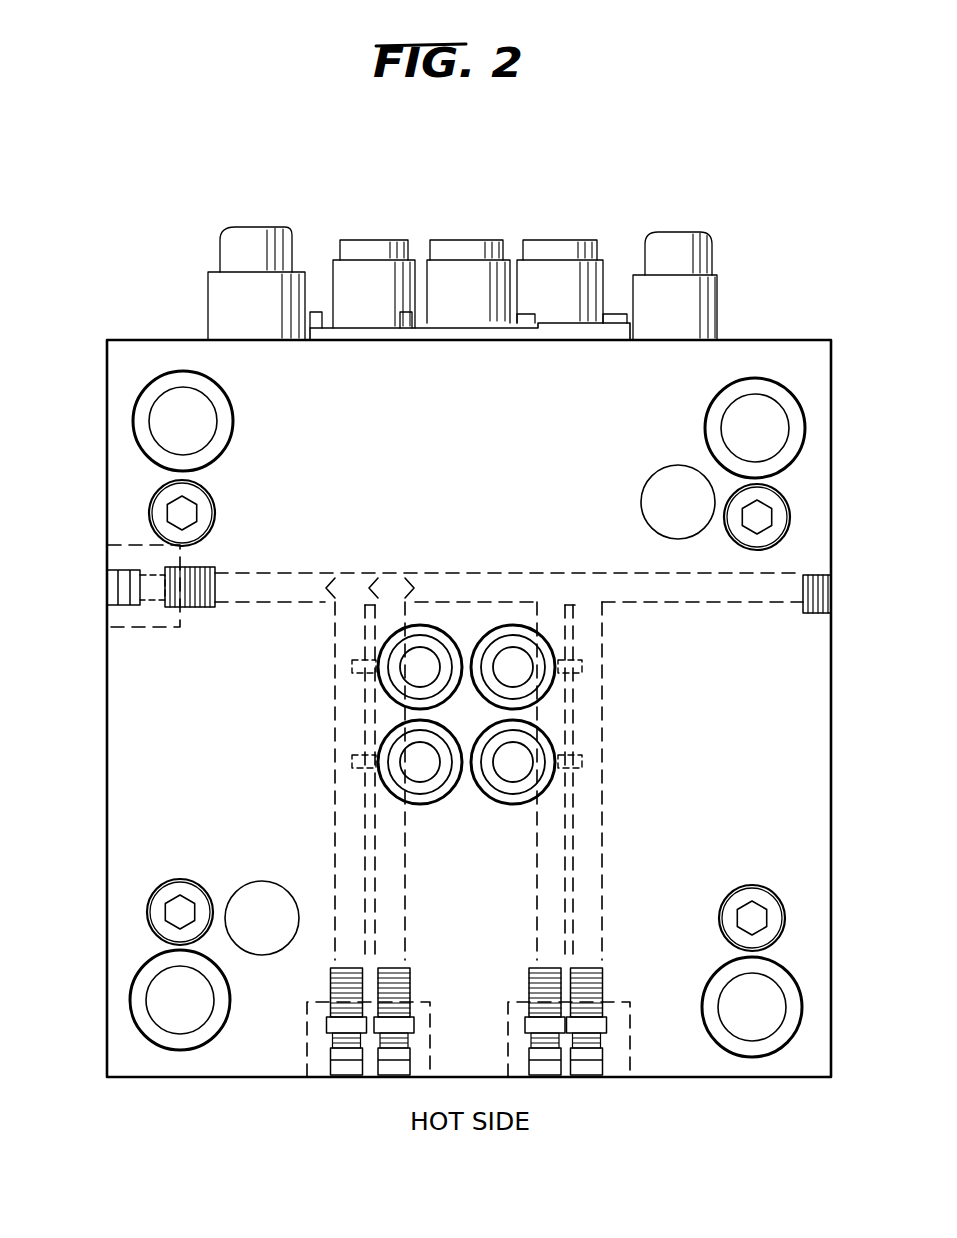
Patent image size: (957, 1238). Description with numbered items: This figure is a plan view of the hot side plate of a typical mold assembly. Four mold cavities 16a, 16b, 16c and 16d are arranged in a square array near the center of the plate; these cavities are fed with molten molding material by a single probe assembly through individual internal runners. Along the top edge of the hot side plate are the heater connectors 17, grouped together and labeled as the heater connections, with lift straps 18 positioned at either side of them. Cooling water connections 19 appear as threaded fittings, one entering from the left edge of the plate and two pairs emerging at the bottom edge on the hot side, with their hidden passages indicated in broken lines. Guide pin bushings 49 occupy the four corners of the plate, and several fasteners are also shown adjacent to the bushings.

The heater connectors 17 is at (597, 214).
The lift straps 18 is at (213, 304).
The guide pin bushings 49 is at (134, 423).
The cooling water connections 19 is at (100, 613).
The mold cavity 16a is at (388, 686).
The mold cavity 16b is at (545, 680).
The mold cavity 16c is at (388, 785).
The mold cavity 16d is at (545, 782).